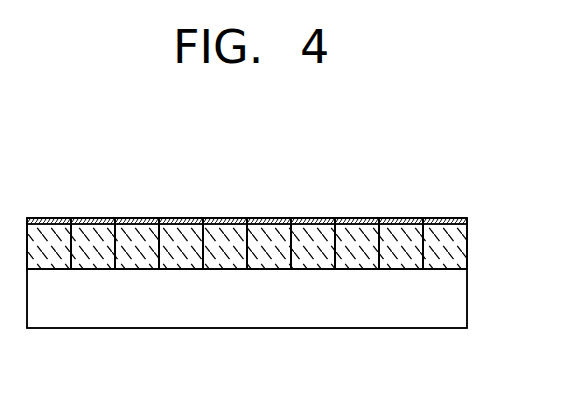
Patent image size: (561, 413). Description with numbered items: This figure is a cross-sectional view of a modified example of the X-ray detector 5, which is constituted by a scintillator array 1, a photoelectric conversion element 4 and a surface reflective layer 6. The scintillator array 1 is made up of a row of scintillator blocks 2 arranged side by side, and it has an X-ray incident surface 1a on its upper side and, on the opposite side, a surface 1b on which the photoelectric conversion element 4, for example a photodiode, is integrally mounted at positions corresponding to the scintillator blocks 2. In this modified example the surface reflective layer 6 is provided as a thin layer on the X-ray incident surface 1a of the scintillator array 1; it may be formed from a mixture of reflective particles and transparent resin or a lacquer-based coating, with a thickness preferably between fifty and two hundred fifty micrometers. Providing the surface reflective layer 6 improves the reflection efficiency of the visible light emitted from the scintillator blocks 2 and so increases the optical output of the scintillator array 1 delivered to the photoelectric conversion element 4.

The scintillator array 1 is at (271, 266).
The X-ray incident surface 1a is at (348, 218).
The element mounting surface 1b is at (349, 269).
The scintillator block 2 is at (441, 233).
The photoelectric conversion element 4 is at (467, 300).
The X-ray detector 5 is at (86, 180).
The surface reflective layer 6 is at (233, 218).